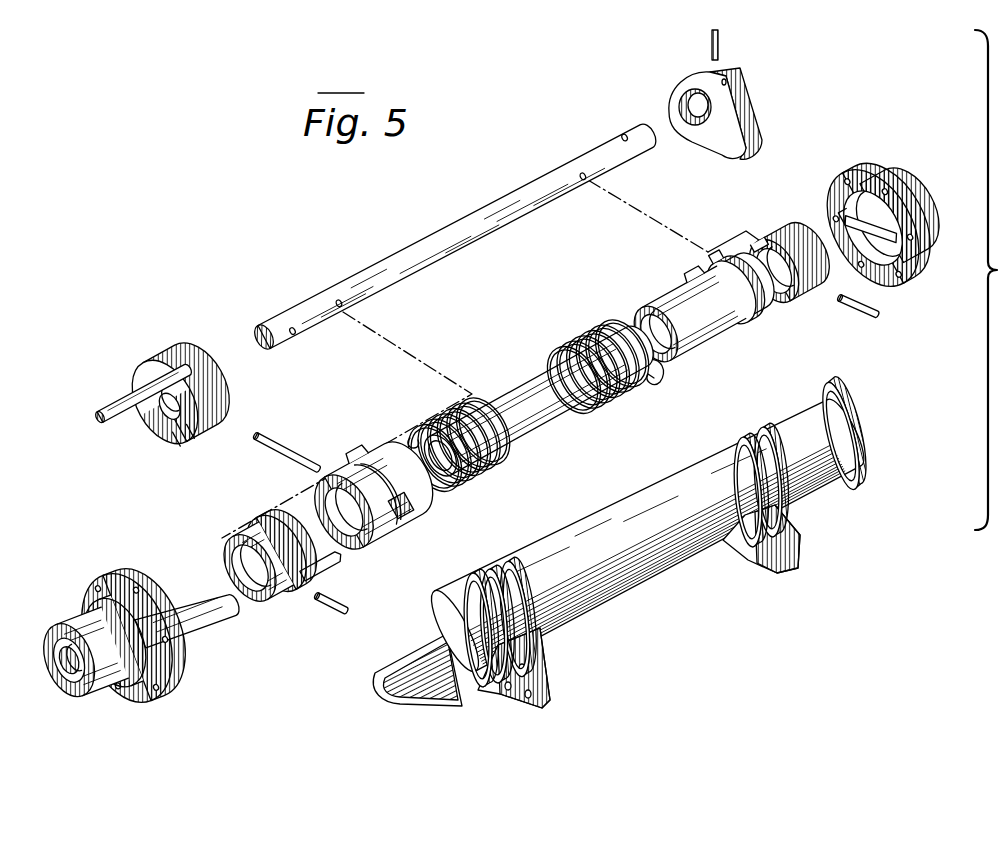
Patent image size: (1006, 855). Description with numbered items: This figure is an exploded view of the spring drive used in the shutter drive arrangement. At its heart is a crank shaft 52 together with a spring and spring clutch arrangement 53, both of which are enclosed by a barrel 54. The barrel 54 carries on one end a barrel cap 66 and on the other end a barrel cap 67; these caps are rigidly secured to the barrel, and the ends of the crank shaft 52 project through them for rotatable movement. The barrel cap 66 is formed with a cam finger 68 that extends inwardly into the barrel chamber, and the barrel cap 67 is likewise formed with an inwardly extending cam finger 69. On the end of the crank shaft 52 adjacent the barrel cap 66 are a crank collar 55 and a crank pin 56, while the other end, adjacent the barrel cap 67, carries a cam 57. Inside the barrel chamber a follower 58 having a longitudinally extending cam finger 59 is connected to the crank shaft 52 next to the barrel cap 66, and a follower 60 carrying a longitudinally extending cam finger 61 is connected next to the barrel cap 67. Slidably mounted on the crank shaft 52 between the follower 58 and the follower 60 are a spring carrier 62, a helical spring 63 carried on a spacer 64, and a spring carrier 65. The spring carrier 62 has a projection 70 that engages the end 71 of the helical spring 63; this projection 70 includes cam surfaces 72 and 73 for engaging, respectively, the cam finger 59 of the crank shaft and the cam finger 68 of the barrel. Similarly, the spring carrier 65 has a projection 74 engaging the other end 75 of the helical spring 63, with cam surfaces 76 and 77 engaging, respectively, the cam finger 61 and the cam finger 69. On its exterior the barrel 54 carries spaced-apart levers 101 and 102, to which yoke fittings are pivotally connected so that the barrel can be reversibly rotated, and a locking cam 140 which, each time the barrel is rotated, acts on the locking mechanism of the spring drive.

The crank shaft 52 is at (410, 250).
The spring and spring clutch arrangement 53 is at (576, 360).
The barrel 54 is at (623, 553).
The crank collar 55 is at (146, 364).
The crank pin 56 is at (110, 405).
The cam 57 is at (748, 127).
The follower 58 is at (295, 564).
The cam finger 59 is at (330, 572).
The follower 60 is at (804, 290).
The cam finger 61 is at (766, 267).
The spring carrier 62 is at (372, 489).
The helical spring 63 is at (443, 432).
The spacer 64 is at (528, 400).
The spring carrier 65 is at (704, 305).
The barrel cap 66 is at (160, 625).
The barrel cap 67 is at (871, 222).
The cam finger 68 is at (238, 605).
The cam finger 69 is at (858, 212).
The projection 70 is at (380, 455).
The end 71 is at (414, 440).
The cam surface 72 is at (388, 522).
The cam surface 73 is at (408, 516).
The projection 74 is at (735, 298).
The end 75 is at (660, 382).
The cam surface 76 is at (700, 286).
The cam surface 77 is at (732, 290).
The lever 101 is at (800, 528).
The lever 102 is at (556, 666).
The locking cam 140 is at (460, 700).